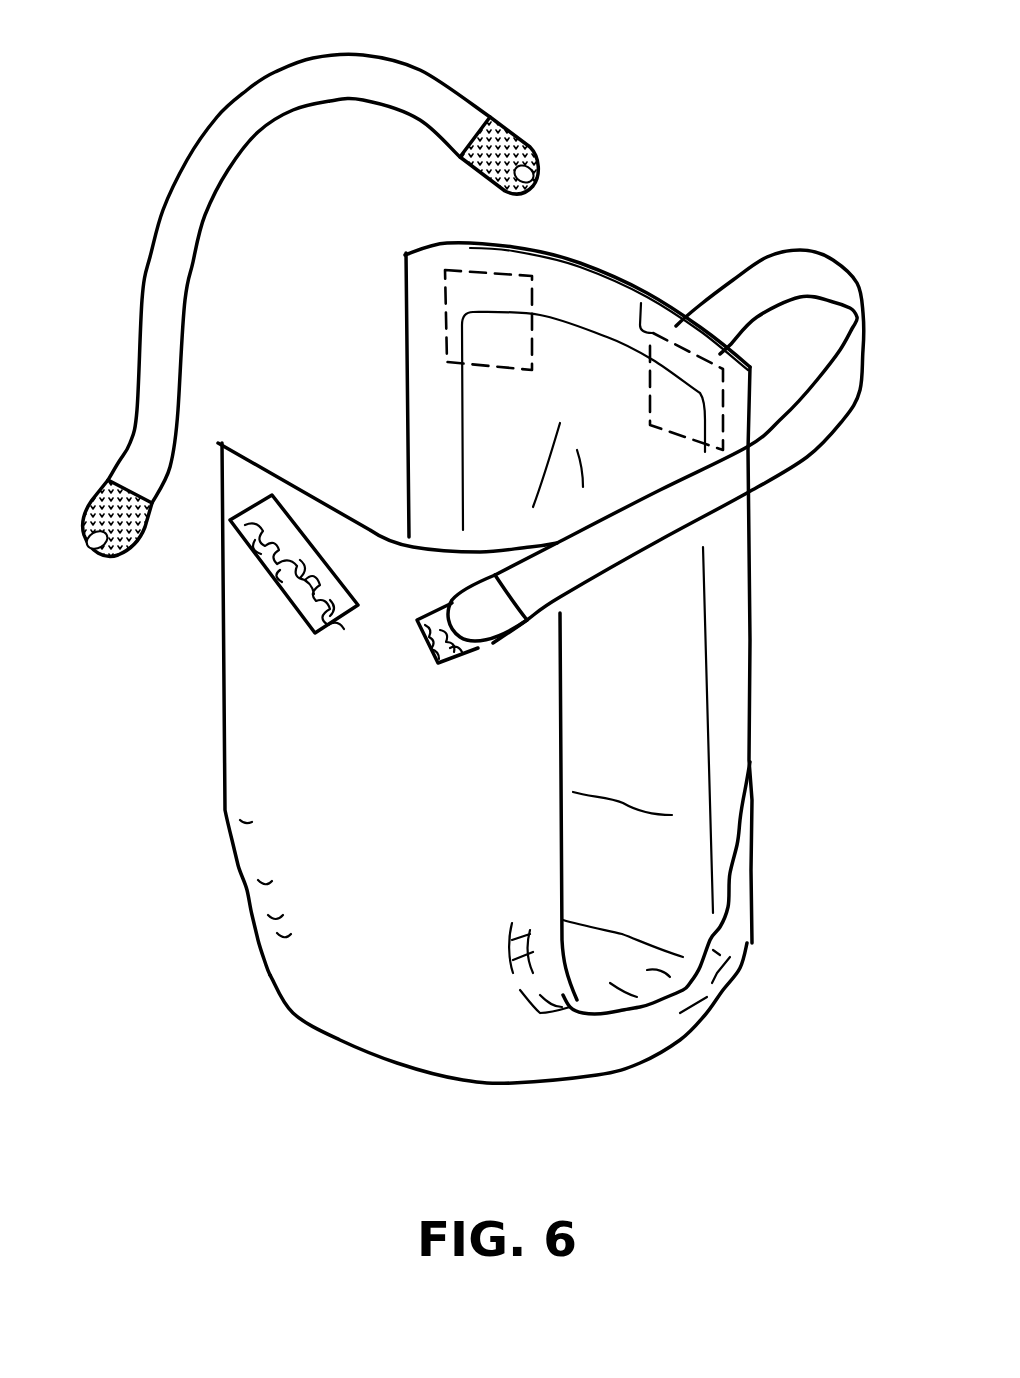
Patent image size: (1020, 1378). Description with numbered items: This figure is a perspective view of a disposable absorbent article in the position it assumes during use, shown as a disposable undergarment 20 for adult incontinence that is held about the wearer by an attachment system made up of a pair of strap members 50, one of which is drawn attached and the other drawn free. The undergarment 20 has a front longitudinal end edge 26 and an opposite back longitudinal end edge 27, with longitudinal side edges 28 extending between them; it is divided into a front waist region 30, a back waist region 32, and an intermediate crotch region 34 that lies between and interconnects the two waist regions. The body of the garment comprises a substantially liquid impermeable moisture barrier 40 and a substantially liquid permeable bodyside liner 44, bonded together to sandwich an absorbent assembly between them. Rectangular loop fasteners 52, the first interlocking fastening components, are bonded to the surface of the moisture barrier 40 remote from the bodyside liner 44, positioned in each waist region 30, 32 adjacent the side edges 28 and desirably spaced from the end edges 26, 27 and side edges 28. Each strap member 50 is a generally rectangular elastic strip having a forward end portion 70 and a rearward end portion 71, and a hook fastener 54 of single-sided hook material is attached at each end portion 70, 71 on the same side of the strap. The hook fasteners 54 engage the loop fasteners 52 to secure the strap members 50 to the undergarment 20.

The disposable undergarment 20 is at (262, 968).
The front longitudinal end edge 26 is at (285, 472).
The back longitudinal end edge 27 is at (572, 264).
The longitudinal side edges 28 is at (755, 684).
The front waist region 30 is at (278, 692).
The back waist region 32 is at (620, 256).
The crotch region 34 is at (522, 1092).
The moisture barrier 40 is at (440, 1027).
The bodyside liner 44 is at (689, 826).
The strap members 50 is at (233, 98).
The loop fasteners 52 is at (430, 275).
The hook fasteners 54 is at (522, 135).
The forward end portion 70 is at (130, 425).
The rearward end portion 71 is at (460, 105).